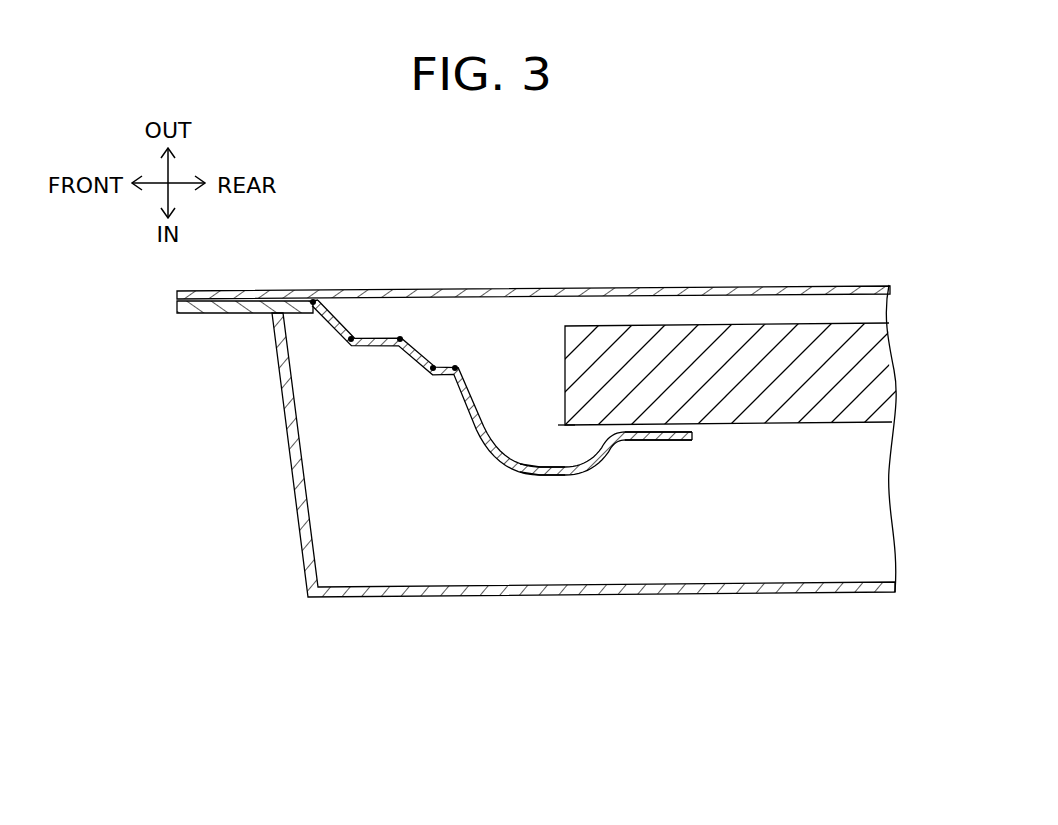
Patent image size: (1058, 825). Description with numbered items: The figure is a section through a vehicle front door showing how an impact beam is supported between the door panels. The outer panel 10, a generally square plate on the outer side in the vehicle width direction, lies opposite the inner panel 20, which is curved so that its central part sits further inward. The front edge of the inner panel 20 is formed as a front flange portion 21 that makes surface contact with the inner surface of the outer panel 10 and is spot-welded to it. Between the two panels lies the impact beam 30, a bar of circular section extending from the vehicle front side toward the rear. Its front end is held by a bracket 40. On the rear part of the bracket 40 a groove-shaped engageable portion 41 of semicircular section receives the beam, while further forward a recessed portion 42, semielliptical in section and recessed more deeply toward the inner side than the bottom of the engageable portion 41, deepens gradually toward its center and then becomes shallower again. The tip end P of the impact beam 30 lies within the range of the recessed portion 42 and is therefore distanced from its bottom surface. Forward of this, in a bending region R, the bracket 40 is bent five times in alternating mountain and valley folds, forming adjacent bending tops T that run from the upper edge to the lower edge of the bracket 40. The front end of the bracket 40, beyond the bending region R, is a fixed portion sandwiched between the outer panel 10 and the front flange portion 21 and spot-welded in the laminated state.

The outer panel 10 is at (592, 288).
The inner panel 20 is at (600, 597).
The front flange portion 21 is at (218, 314).
The impact beam 30 is at (815, 424).
The bracket 40 is at (614, 509).
The engageable portion 41 is at (674, 432).
The recessed portion 42 is at (532, 462).
The bending tops T is at (318, 300).
The bending region R is at (303, 322).
The tip end P is at (565, 425).